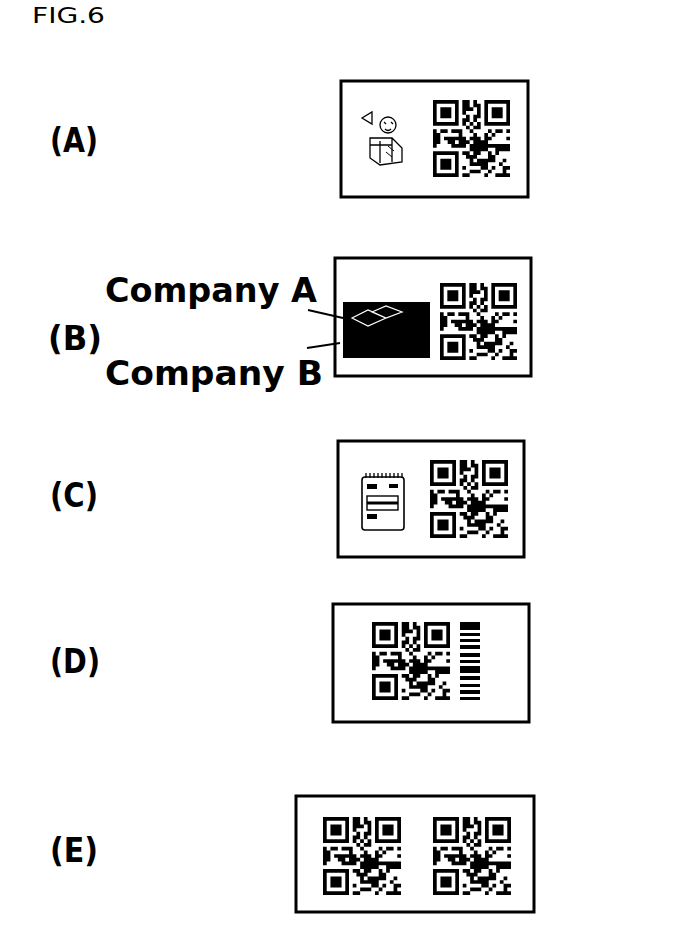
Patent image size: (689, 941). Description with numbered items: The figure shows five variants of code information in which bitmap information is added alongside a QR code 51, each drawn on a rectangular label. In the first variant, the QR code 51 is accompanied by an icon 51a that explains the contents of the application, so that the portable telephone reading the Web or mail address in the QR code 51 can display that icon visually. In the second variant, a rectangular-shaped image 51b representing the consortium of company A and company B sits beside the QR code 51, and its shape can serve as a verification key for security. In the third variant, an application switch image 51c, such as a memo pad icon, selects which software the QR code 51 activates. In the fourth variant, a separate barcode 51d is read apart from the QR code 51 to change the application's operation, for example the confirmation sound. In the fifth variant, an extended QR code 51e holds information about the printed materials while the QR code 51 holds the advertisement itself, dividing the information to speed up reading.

The QR code 51 is at (320, 805).
The icon 51a is at (362, 149).
The rectangular-shaped image 51b is at (383, 305).
The application switch image 51c is at (349, 518).
The barcode 51d is at (478, 652).
The extended QR code 51e is at (480, 812).